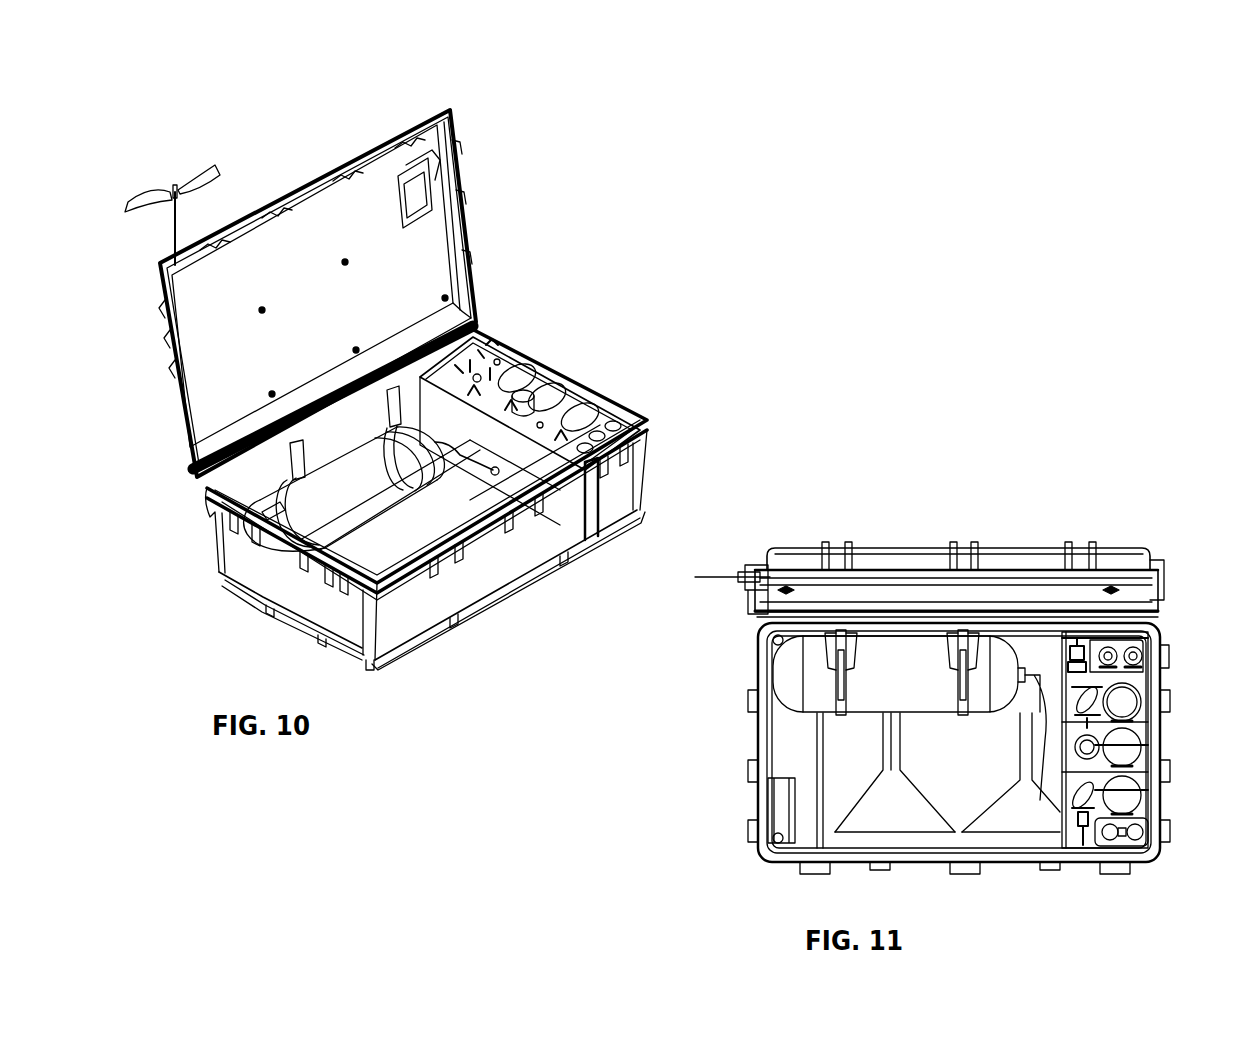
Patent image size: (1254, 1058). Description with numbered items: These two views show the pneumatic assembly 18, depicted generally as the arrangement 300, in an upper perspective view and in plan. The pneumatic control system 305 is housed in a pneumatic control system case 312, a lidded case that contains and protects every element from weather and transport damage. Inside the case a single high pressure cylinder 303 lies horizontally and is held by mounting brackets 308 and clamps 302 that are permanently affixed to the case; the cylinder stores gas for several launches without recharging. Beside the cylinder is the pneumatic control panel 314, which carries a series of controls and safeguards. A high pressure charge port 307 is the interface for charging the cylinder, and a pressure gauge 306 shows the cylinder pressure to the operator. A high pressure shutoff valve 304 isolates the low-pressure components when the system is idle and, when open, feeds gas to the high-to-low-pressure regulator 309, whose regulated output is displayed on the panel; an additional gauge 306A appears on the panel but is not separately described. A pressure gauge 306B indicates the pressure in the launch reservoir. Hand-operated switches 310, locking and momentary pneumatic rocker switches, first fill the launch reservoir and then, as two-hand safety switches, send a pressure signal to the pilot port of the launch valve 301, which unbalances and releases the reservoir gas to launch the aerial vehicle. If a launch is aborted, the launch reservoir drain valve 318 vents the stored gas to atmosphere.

In FIG. 10, the pneumatic assembly 18 is at (262, 155).
In FIG. 10, the portable oxygen system 300 is at (322, 122).
In FIG. 11, the launch valve 301 is at (1135, 652).
In FIG. 10, the clamps 302 is at (371, 488).
In FIG. 11, the clamps 302 is at (835, 702).
In FIG. 10, the high pressure cylinder 303 is at (283, 512).
In FIG. 11, the high pressure shutoff valve 304 is at (1110, 705).
In FIG. 10, the pneumatic control system 305 is at (650, 428).
In FIG. 11, the pneumatic control system 305 is at (959, 748).
In FIG. 11, the pressure gauge 306 is at (1140, 705).
In FIG. 11, the gauge 306A is at (1141, 745).
In FIG. 11, the pressure gauge 306B is at (1141, 790).
In FIG. 11, the high pressure charge port 307 is at (1062, 665).
In FIG. 11, the mounting brackets 308 is at (830, 660).
In FIG. 11, the high-to-low-pressure regulator 309 is at (1075, 750).
In FIG. 11, the hand-operated switches 310 is at (1130, 843).
In FIG. 10, the pneumatic control system case 312 is at (535, 565).
In FIG. 10, the pneumatic control panel 314 is at (572, 345).
In FIG. 11, the pneumatic control panel 314 is at (1062, 905).
In FIG. 11, the launch reservoir drain valve 318 is at (1086, 832).